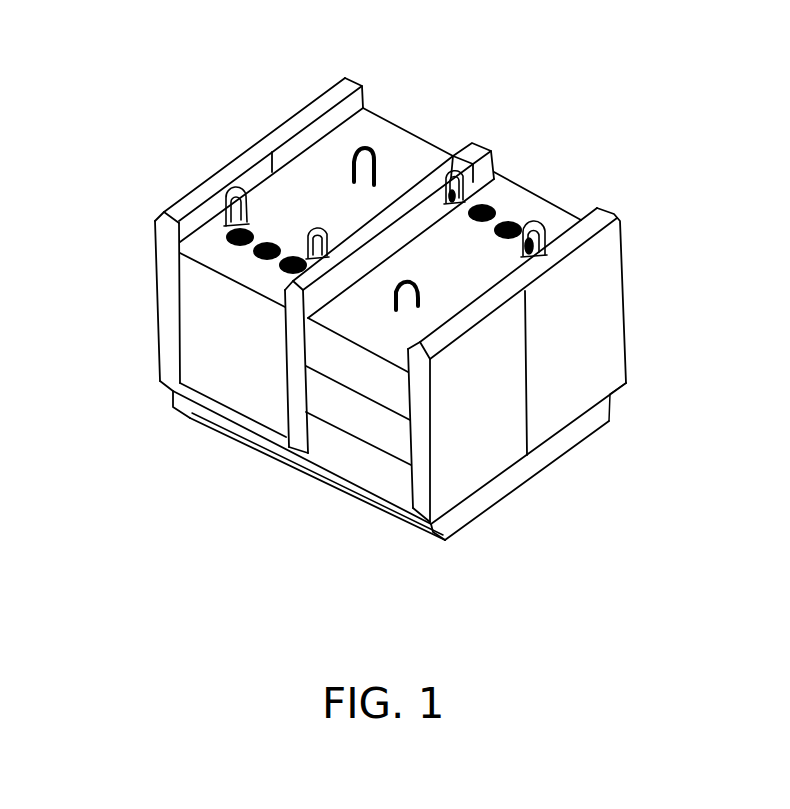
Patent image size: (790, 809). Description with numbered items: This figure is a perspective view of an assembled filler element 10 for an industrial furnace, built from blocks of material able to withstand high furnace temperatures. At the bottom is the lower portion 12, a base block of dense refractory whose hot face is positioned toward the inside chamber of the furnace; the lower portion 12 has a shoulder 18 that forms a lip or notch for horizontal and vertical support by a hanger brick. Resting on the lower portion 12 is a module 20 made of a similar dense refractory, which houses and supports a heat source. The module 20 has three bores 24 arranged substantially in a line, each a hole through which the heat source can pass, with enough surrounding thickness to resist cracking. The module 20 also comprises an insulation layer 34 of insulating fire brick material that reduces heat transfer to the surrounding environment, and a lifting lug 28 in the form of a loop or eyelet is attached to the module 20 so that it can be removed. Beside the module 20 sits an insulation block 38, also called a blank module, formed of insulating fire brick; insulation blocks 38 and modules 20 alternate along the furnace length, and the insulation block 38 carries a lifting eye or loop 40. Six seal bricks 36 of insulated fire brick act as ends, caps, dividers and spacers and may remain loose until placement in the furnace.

The filler element 10 is at (125, 76).
The lower portion 12 is at (457, 528).
The shoulder 18 is at (610, 408).
The module 20 is at (200, 397).
The bore 24 is at (237, 237).
The lifting lug 28 is at (640, 218).
The insulation layer 34 is at (188, 367).
The seal brick 36 is at (343, 79).
The insulation block 38 is at (397, 135).
The lifting eye 40 is at (353, 150).